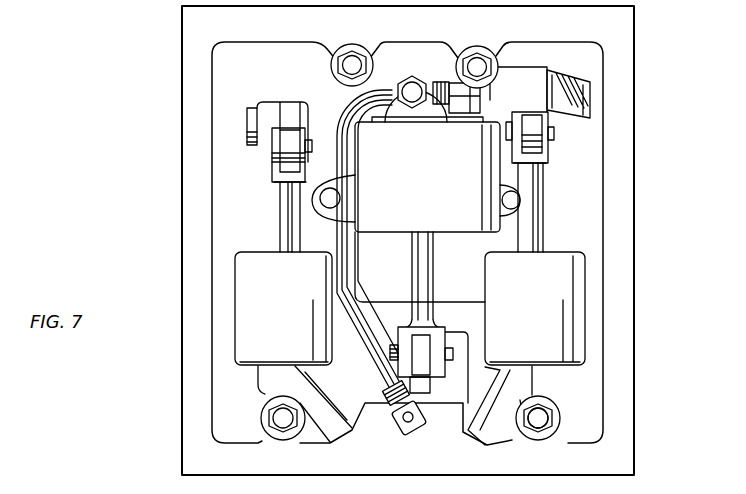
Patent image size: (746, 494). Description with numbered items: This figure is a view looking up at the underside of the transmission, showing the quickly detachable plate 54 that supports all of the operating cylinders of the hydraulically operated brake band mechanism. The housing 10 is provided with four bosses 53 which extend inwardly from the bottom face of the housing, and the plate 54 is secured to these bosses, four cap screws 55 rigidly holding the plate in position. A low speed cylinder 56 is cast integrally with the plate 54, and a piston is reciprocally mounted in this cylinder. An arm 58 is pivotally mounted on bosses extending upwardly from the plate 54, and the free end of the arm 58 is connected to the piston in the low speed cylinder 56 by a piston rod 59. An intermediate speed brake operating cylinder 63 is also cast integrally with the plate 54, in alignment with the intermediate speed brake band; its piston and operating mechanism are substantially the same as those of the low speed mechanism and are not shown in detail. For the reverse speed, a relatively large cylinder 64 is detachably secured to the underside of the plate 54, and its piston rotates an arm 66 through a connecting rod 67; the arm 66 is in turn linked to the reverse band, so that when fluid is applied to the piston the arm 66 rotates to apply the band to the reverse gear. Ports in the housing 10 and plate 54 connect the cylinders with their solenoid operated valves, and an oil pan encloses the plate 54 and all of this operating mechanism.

The housing 10 is at (637, 178).
The bosses 53 is at (331, 60).
The plate 54 is at (420, 317).
The cap screws 55 is at (526, 428).
The low speed cylinder 56 is at (526, 348).
The arm 58 is at (563, 115).
The piston rod 59 is at (541, 213).
The intermediate speed brake operating cylinder 63 is at (293, 272).
The reverse speed cylinder 64 is at (416, 154).
The arm 66 is at (427, 393).
The connecting rod 67 is at (430, 268).